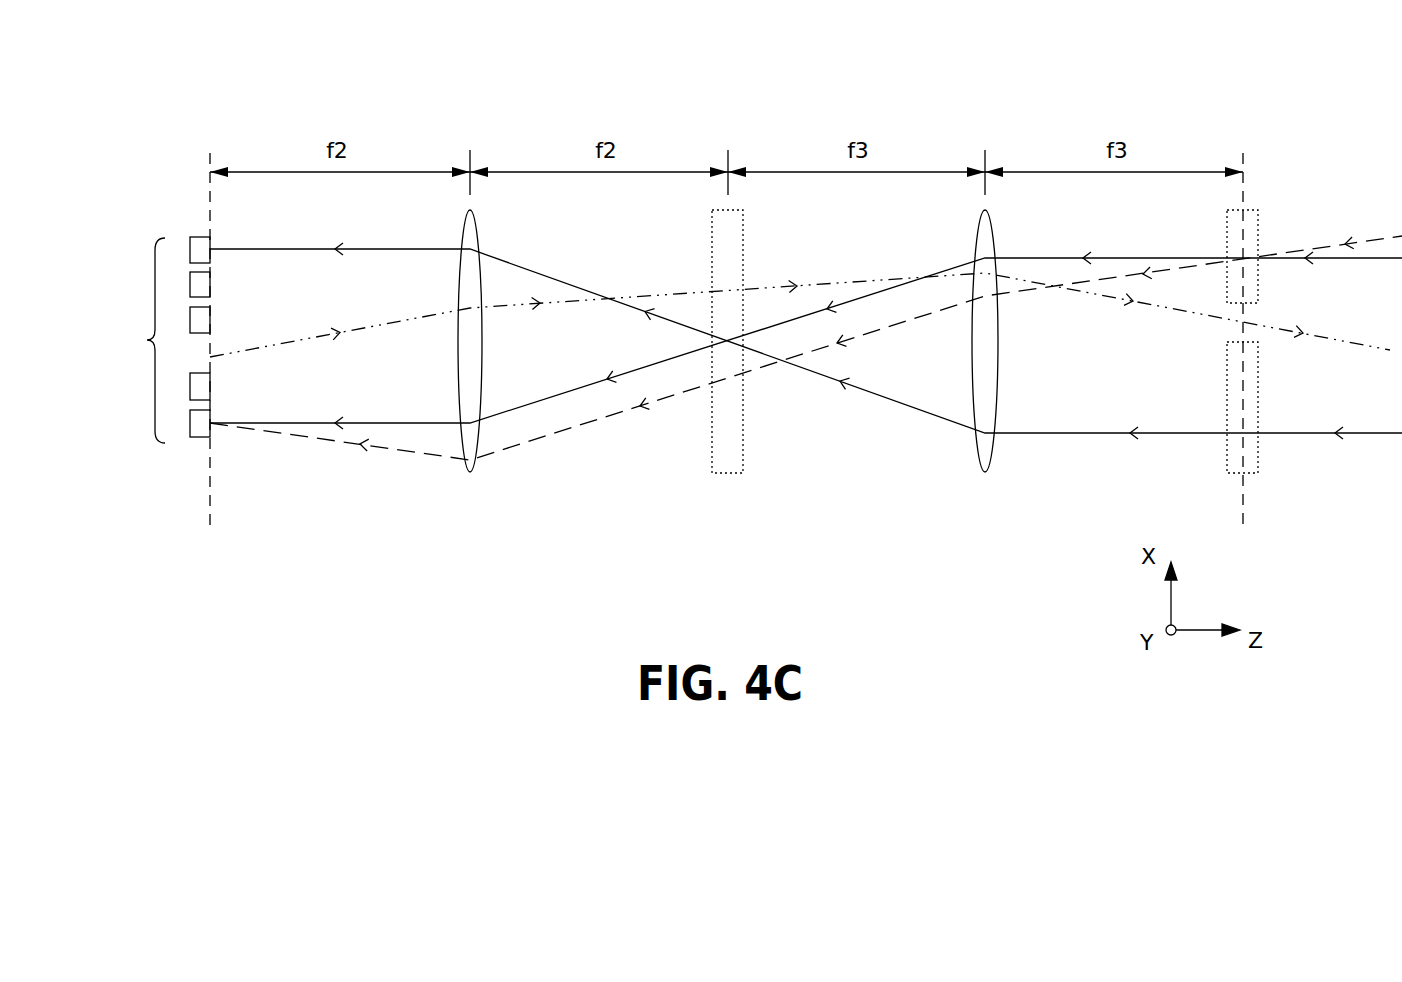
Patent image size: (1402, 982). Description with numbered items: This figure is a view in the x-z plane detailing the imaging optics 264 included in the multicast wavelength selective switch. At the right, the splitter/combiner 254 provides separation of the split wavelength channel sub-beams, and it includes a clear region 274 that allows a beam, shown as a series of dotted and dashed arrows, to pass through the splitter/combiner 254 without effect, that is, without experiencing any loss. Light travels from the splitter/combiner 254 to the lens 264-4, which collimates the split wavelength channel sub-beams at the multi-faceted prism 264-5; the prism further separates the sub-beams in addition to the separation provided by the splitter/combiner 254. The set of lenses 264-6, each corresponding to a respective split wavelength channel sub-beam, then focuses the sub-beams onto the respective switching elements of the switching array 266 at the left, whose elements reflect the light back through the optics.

The imaging optics 264 is at (365, 78).
The lens 264-4 is at (977, 365).
The multi-faceted prism 264-5 is at (727, 365).
The set of lenses 264-6 is at (472, 365).
The switching array 266 is at (151, 340).
The splitter/combiner 254 is at (1272, 342).
The clear region 274 is at (1228, 331).